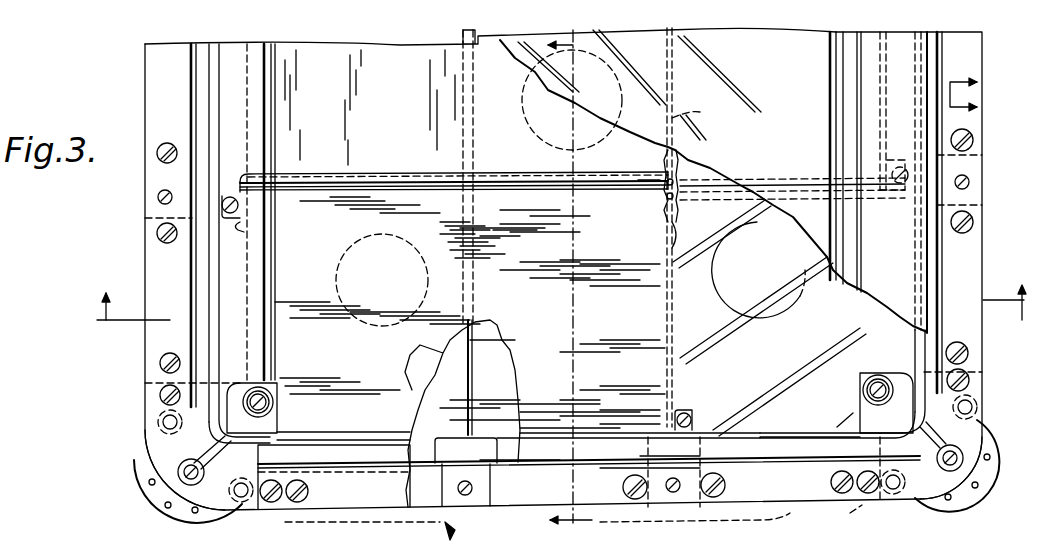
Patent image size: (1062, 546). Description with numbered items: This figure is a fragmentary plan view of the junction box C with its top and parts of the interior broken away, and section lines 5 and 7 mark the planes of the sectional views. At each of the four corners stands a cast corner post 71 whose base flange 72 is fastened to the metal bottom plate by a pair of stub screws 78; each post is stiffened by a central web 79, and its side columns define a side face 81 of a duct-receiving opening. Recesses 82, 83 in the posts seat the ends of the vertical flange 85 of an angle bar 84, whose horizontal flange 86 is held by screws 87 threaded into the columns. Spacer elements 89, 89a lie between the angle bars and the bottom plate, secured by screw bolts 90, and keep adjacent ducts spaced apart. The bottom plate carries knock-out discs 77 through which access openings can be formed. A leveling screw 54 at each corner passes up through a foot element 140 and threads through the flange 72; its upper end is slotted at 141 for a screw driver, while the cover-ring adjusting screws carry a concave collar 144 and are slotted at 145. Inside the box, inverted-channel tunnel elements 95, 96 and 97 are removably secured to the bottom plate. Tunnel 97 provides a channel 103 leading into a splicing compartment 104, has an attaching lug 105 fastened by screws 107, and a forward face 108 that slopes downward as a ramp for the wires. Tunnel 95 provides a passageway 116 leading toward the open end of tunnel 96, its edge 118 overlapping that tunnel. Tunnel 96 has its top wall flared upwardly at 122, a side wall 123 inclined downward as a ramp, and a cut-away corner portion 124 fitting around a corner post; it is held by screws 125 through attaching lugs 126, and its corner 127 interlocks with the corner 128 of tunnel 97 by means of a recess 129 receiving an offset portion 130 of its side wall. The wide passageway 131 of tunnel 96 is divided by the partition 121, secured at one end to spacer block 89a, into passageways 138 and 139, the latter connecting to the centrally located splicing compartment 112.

The section line 5- 5 is at (561, 308).
The section line 7- 7 is at (570, 285).
The leveling screw 54 is at (166, 511).
The corner post 71 is at (216, 455).
The base flange 72 is at (156, 460).
The knock-out discs 77 is at (535, 100).
The stub screws 78 is at (164, 425).
The central web 79 is at (400, 186).
The side face 81 is at (150, 386).
The recess 82 is at (240, 382).
The recess 83 is at (272, 432).
The angle bar 84 is at (160, 273).
The vertical flange 85 is at (212, 297).
The horizontal flange 86 is at (160, 338).
The screws 87 is at (160, 398).
The spacer element 89 is at (150, 222).
The spacer element 89a is at (465, 510).
The screw bolts 90 is at (158, 197).
The tunnel element 95 is at (380, 93).
The tunnel element 96 is at (536, 258).
The tunnel element 97 is at (718, 172).
The channel 103 is at (706, 212).
The splicing compartment 104 is at (714, 323).
The attaching lug 105 is at (900, 166).
The screws 107 is at (900, 186).
The forward face 108 is at (907, 77).
The splicing compartment 112 is at (524, 152).
The passageway 116 is at (425, 192).
The edge 118 is at (325, 173).
The divider wall 121 is at (475, 385).
The flared top wall portion 122 is at (360, 442).
The side wall 123 is at (262, 326).
The corner portion 124 is at (270, 394).
The screws 125 is at (244, 205).
The attaching lugs 126 is at (244, 232).
The corner 127 is at (640, 180).
The corner 128 is at (666, 196).
The recess 129 is at (682, 152).
The offset portion 130 is at (670, 228).
The passageway 131 is at (500, 352).
The passageway 138 is at (440, 362).
The passageway 139 is at (495, 322).
The foot element 140 is at (998, 477).
The slot 141 is at (168, 494).
The concave collar 144 is at (268, 394).
The slot 145 is at (270, 402).
The junction box C is at (1003, 131).